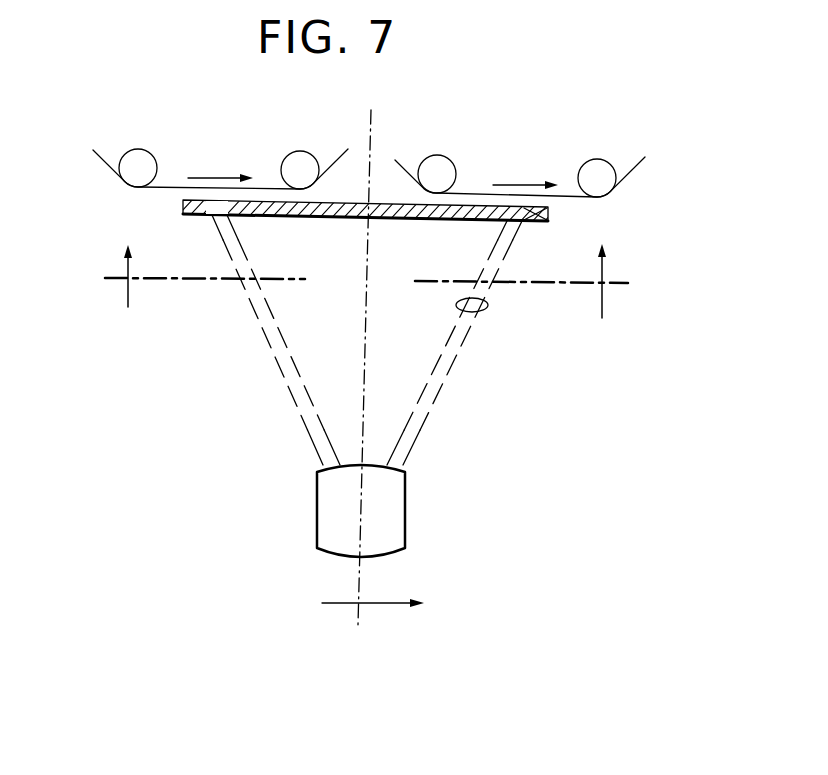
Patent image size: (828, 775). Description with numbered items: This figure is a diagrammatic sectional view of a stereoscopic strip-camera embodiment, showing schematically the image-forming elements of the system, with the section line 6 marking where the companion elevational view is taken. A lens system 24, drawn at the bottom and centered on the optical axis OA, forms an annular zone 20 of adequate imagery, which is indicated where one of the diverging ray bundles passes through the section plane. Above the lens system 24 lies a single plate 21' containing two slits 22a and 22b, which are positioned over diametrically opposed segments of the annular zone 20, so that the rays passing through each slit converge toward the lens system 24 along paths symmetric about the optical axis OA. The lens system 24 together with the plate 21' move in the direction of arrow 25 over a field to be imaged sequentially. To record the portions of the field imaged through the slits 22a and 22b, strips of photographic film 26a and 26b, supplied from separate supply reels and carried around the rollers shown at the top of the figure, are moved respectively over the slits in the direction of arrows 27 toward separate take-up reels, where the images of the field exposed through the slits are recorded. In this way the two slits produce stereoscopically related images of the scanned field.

The optical axis OA is at (371, 357).
The annular zone 20 is at (488, 307).
The plate 21' is at (368, 236).
The slit 22a is at (523, 222).
The slit 22b is at (215, 218).
The lens system 24 is at (403, 510).
The arrow 25 is at (387, 607).
The strip of photographic film 26a is at (645, 163).
The strip of photographic film 26b is at (100, 153).
The arrows 27 is at (230, 158).
The line 6— 6 is at (364, 283).